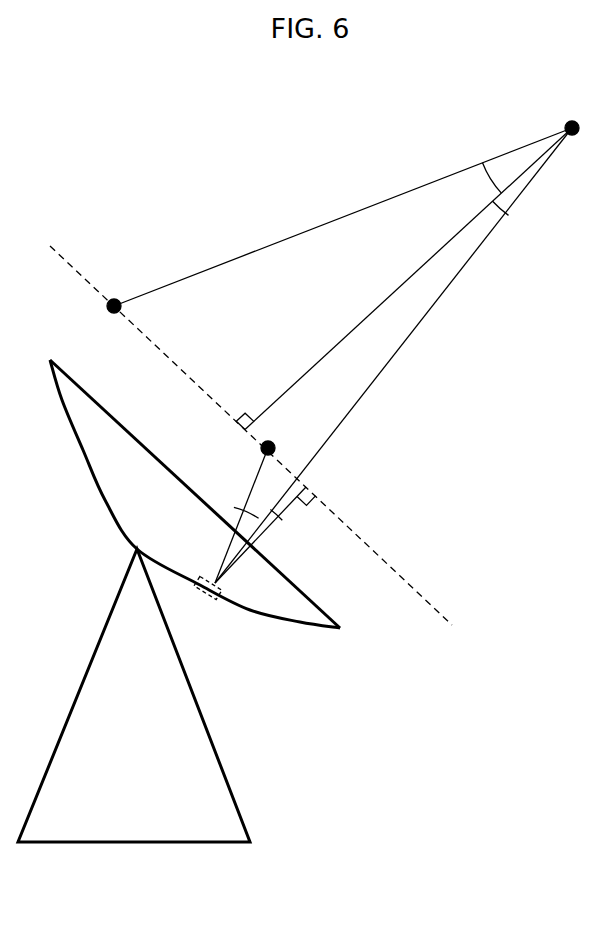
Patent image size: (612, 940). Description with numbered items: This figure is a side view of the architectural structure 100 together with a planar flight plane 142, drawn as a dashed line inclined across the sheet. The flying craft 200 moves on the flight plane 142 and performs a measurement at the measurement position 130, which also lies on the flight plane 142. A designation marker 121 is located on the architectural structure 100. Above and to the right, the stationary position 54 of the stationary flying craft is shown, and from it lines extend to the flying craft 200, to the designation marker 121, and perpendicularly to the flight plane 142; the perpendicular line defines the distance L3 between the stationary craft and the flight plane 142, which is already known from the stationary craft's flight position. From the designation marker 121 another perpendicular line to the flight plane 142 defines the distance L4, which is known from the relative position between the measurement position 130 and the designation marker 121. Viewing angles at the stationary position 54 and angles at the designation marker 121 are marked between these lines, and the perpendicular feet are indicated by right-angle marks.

The stationary position 54 is at (572, 121).
The flight plane 142 is at (52, 250).
The flying craft 200 is at (114, 299).
The measurement position 130 is at (276, 447).
The architectural structure 100 is at (50, 359).
The designation marker 121 is at (208, 598).
The distance L3 is at (300, 354).
The distance L4 is at (273, 535).